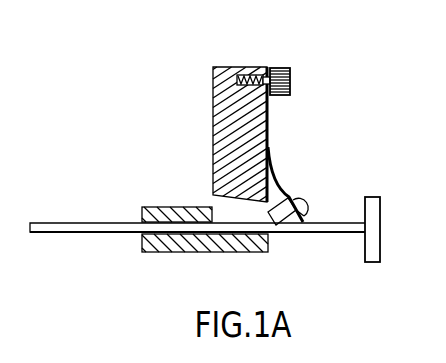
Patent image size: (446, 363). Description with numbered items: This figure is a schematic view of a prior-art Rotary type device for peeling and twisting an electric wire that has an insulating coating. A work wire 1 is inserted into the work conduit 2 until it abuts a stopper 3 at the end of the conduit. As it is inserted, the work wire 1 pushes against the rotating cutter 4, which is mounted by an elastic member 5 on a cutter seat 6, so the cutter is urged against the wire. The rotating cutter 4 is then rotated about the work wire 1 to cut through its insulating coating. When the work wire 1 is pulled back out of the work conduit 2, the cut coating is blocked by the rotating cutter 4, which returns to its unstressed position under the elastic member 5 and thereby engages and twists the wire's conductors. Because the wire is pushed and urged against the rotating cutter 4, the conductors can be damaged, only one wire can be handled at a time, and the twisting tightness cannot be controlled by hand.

The work wire 1 is at (71, 223).
The work conduit 2 is at (140, 236).
The stopper 3 is at (373, 248).
The rotating cutter 4 is at (304, 204).
The elastic member 5 is at (277, 172).
The cutter seat 6 is at (238, 67).